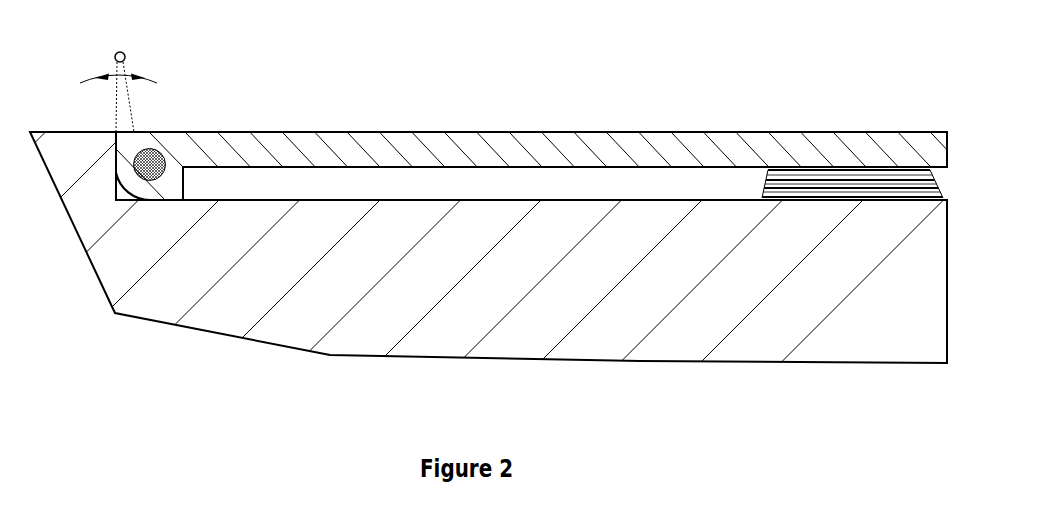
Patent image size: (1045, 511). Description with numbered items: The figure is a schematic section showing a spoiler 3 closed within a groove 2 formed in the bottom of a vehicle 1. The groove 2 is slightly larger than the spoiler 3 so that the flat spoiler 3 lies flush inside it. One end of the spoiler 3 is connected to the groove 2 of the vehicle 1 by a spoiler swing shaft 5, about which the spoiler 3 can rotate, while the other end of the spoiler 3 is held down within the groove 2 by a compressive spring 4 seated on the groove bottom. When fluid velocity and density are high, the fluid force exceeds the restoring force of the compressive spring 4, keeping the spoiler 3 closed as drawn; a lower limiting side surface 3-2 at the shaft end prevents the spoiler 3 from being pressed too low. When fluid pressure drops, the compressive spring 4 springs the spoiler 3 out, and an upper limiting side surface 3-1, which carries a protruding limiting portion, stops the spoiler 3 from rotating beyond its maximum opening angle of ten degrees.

The vehicle 1 is at (506, 248).
The groove 2 is at (682, 200).
The spoiler 3 is at (575, 148).
The upper limiting side surface 3-1 is at (123, 140).
The lower limiting side surface 3-2 is at (175, 201).
The compressive spring 4 is at (862, 200).
The spoiler swing shaft 5 is at (152, 172).